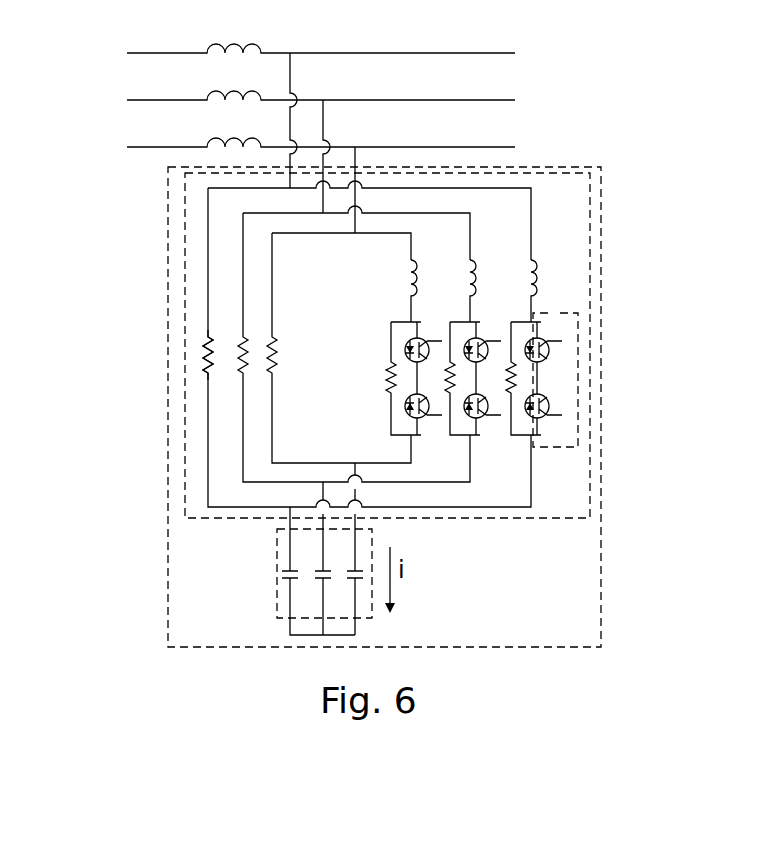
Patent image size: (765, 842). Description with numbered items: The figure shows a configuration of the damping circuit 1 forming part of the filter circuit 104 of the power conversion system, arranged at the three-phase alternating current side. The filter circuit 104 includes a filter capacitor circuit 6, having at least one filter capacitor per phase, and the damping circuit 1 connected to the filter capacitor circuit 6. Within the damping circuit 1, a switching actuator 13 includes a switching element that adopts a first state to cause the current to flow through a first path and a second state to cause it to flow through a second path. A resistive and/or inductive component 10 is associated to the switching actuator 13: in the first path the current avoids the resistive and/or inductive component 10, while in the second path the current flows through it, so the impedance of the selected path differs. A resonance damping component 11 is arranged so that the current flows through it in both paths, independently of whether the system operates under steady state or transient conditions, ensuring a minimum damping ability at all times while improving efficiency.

The filter circuit 104 is at (168, 217).
The damping circuit 1 is at (186, 467).
The resonance damping component 11 is at (203, 355).
The resistive and/or inductive component 10 is at (391, 377).
The switching actuator 13 is at (562, 313).
The filter capacitor circuit 6 is at (277, 598).